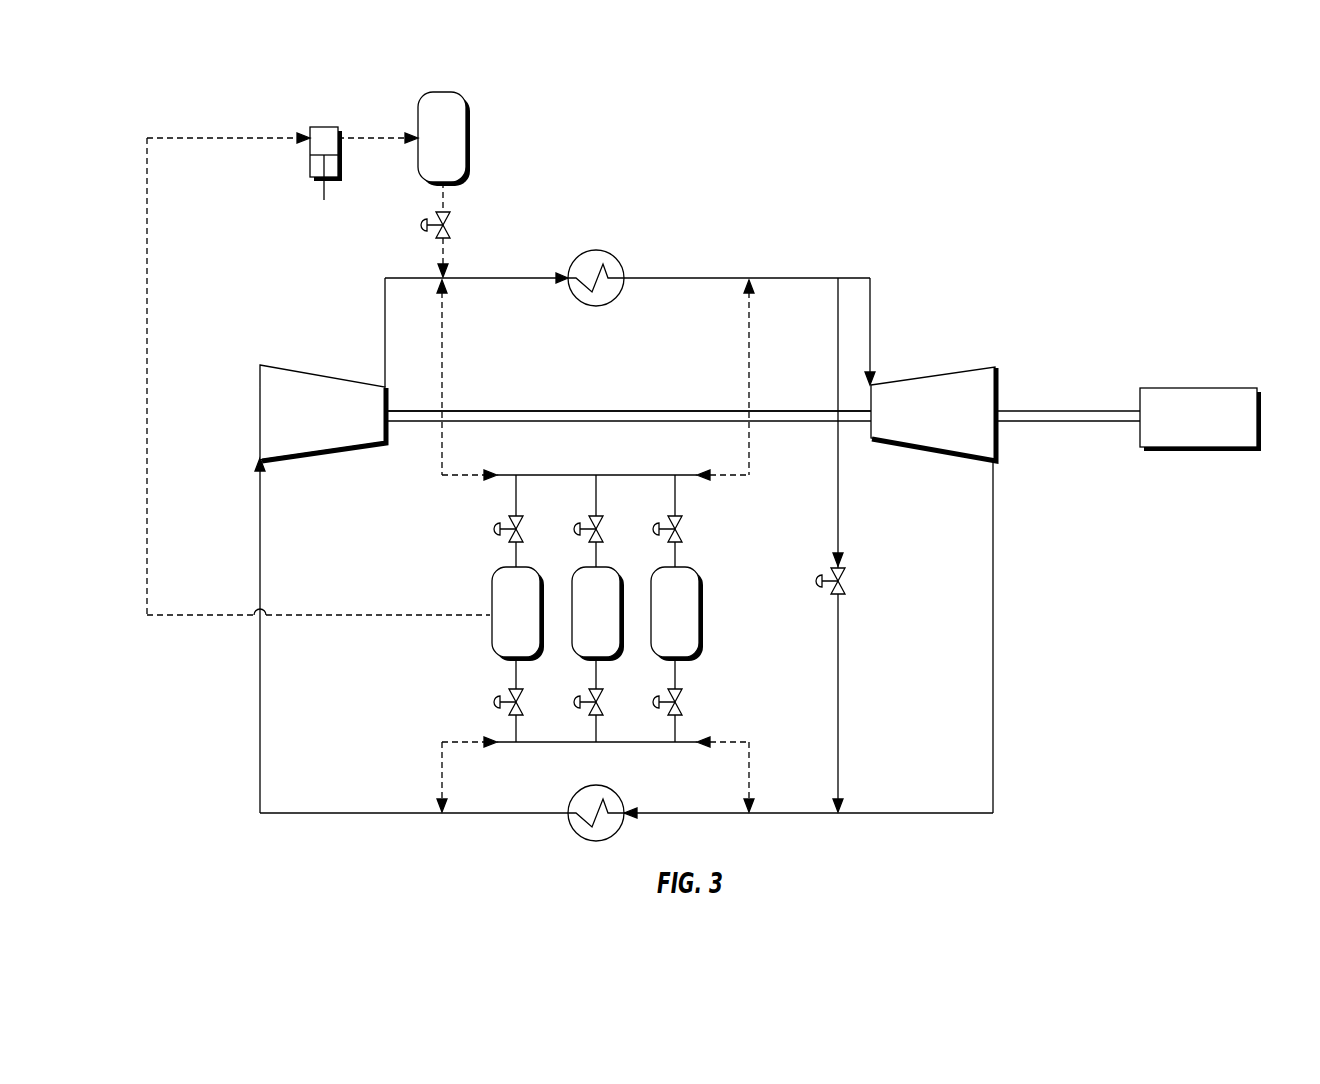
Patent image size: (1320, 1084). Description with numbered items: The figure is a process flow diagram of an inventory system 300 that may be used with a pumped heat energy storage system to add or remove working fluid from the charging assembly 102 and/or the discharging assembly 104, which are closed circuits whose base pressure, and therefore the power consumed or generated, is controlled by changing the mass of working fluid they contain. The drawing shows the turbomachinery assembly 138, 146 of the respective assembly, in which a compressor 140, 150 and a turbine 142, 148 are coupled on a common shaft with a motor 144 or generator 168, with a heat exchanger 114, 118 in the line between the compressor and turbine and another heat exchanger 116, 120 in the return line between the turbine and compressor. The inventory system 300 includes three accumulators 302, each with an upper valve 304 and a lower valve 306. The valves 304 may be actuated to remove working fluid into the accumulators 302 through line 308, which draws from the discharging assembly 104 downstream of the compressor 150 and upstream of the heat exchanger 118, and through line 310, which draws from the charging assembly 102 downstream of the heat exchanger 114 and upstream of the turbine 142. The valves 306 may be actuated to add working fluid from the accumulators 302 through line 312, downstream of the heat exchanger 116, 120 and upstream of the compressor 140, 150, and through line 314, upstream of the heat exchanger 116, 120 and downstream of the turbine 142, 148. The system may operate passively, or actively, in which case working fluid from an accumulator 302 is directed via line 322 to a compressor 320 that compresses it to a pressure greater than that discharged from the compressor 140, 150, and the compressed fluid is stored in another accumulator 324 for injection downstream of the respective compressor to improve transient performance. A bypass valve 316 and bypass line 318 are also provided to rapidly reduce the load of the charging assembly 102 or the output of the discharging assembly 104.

The inventory system 300 is at (943, 157).
The accumulators 302 is at (535, 624).
The valves 304 is at (494, 529).
The valves 306 is at (494, 702).
The line 308 is at (442, 460).
The line 310 is at (750, 462).
The line 312 is at (443, 768).
The line 314 is at (748, 775).
The bypass valve 316 is at (818, 581).
The bypass line 318 is at (838, 703).
The compressor 320 is at (320, 127).
The line 322 is at (212, 617).
The accumulator 324 is at (470, 122).
The charging assembly 102 is at (275, 419).
The discharging assembly 104 is at (275, 419).
The first heat exchanger 114 is at (619, 251).
The third heat exchanger 118 is at (598, 250).
The second heat exchanger 116 is at (633, 799).
The fourth heat exchanger 120 is at (598, 786).
The turbomachinery assembly 138 is at (629, 370).
The turbomachinery assembly 146 is at (549, 390).
The compressor 140 is at (323, 391).
The compressor 150 is at (300, 378).
The turbine 142 is at (933, 391).
The turbine 148 is at (946, 375).
The motor 144 is at (1201, 390).
The generator 168 is at (1200, 388).